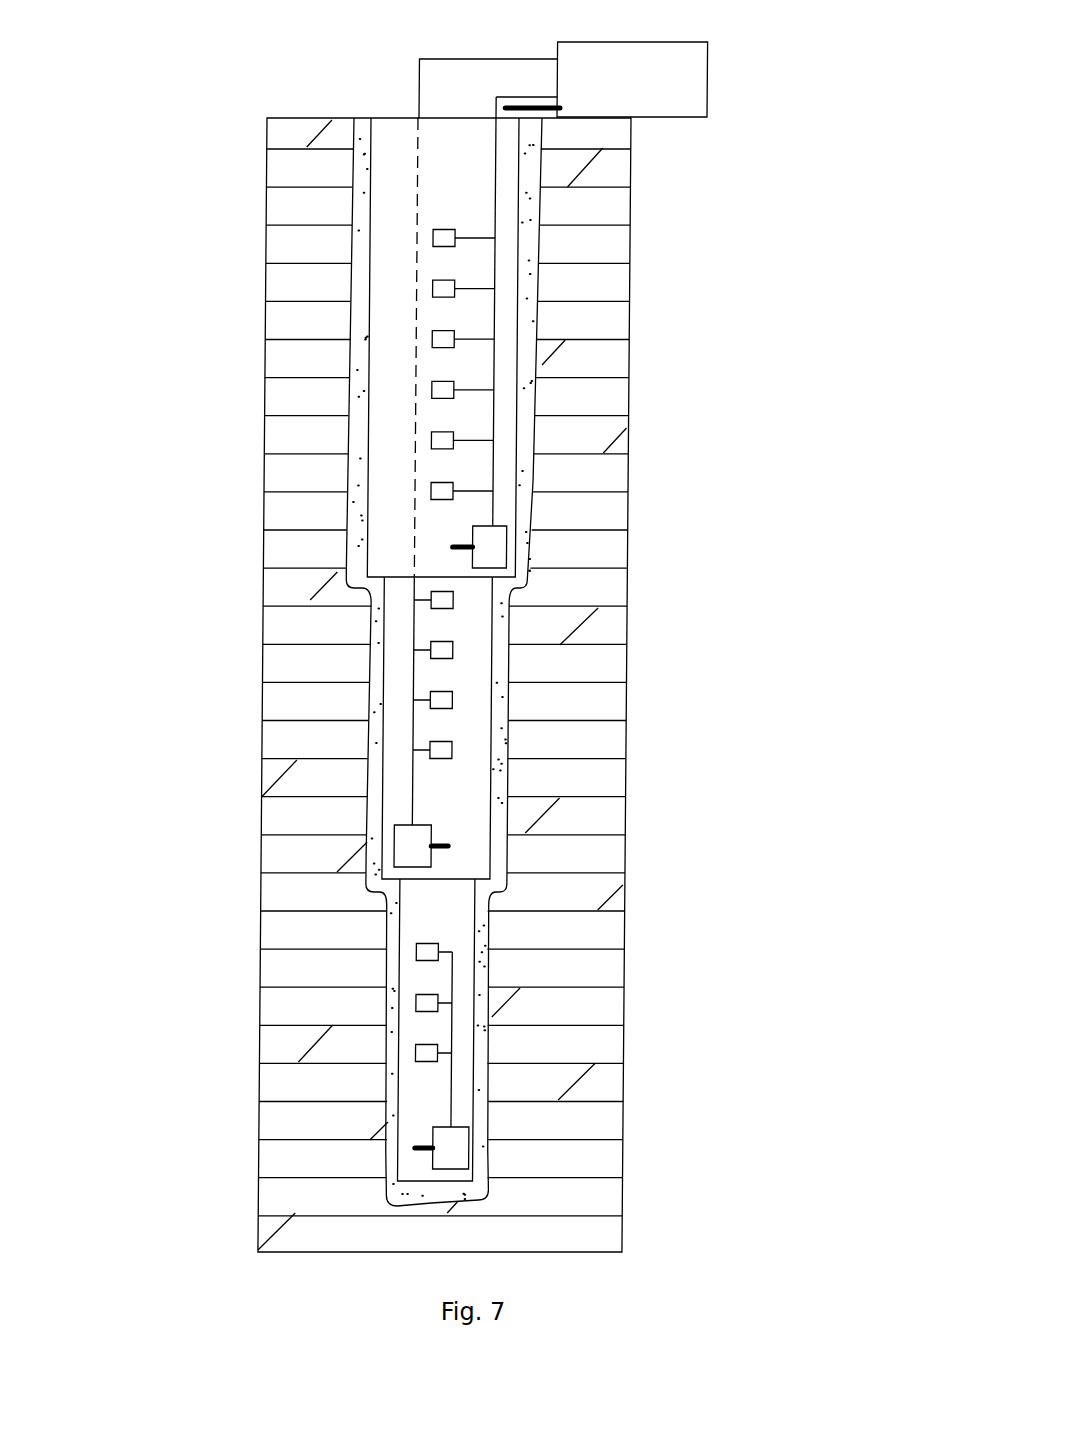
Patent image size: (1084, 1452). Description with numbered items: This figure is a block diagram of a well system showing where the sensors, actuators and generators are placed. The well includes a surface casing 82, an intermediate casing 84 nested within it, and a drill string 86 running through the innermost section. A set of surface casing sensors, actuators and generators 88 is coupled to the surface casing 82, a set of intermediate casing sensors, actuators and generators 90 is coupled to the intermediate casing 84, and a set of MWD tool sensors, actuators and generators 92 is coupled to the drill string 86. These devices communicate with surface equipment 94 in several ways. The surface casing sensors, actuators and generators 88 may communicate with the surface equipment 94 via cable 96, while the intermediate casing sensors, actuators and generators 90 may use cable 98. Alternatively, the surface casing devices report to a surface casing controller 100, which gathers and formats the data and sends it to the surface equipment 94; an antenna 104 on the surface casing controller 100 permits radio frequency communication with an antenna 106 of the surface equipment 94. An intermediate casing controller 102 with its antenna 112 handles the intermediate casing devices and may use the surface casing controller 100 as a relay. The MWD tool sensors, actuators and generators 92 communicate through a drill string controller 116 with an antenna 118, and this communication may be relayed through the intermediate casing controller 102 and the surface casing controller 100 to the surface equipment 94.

The surface casing 82 is at (521, 323).
The intermediate casing 84 is at (497, 777).
The drill string 86 is at (484, 964).
The surface casing sensors, actuators and generators 88 is at (444, 491).
The intermediate casing sensors, actuators and generators 90 is at (453, 750).
The MWD tool sensors, actuators and generators 92 is at (432, 1053).
The surface equipment 94 is at (655, 58).
The cable 96 is at (497, 277).
The cable 98 is at (418, 725).
The surface casing controller 100 is at (503, 552).
The intermediate casing controller 102 is at (413, 846).
The antenna 104 is at (453, 547).
The antenna 106 is at (533, 104).
The antenna 112 is at (454, 846).
The drill string controller 116 is at (466, 1152).
The antenna 118 is at (423, 1148).